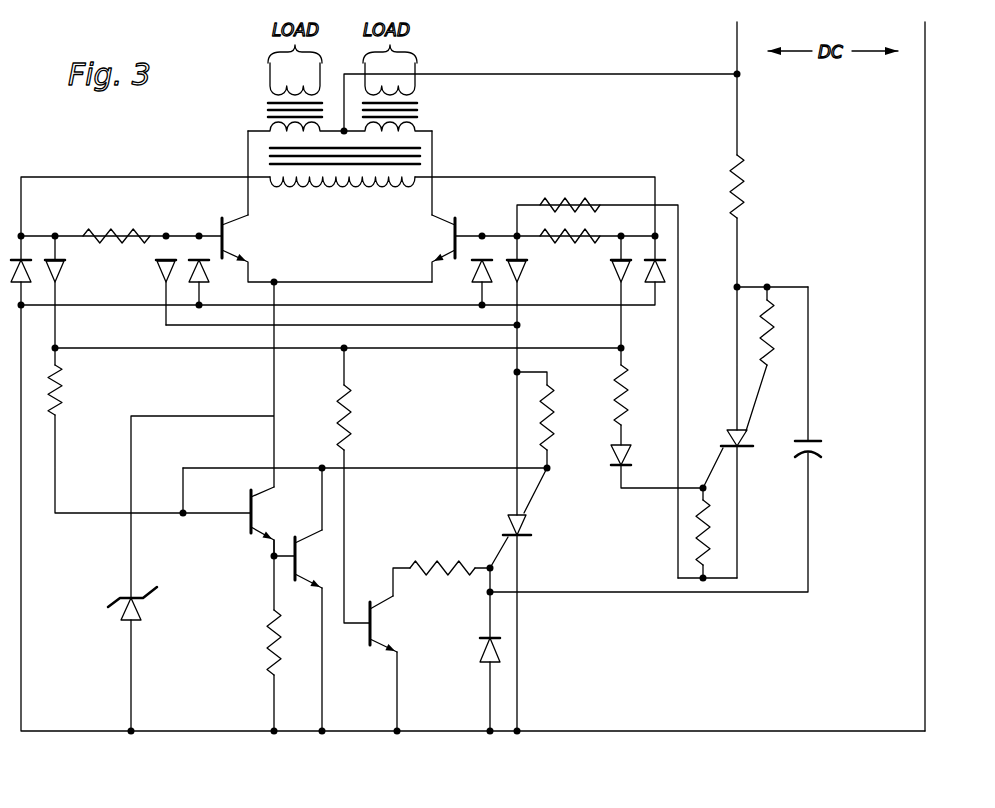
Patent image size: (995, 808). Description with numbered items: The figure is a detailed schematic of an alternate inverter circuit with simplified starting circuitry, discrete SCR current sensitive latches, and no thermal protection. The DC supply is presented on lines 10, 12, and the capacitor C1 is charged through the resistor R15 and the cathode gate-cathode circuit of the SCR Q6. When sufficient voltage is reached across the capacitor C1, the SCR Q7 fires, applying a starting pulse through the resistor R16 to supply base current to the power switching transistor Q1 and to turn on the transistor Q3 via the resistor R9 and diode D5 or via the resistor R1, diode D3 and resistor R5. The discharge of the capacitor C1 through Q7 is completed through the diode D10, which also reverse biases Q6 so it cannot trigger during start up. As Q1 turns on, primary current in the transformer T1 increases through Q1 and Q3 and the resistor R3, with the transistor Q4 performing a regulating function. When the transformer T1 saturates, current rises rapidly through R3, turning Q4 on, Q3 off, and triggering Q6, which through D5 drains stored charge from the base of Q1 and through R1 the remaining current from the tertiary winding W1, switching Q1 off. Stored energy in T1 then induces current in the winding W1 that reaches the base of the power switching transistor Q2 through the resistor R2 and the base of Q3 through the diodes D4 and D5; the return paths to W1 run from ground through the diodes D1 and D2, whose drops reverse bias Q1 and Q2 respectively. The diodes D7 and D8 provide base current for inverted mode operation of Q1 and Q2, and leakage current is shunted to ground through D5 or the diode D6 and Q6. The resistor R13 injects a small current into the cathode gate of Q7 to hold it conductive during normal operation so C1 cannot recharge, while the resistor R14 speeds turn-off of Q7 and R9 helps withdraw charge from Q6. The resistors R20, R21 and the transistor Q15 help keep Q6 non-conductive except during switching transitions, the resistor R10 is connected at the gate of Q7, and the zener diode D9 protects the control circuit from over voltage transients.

The DC supply line 10 is at (737, 130).
The DC supply line 12 is at (925, 137).
The transformer T1 is at (357, 130).
The tertiary winding W1 is at (342, 191).
The power switching transistor Q1 is at (435, 248).
The power switching transistor Q2 is at (327, 248).
The transistor Q3 is at (267, 521).
The transistor Q4 is at (309, 559).
The SCR current latch Q6 is at (530, 535).
The SCR current latch Q7 is at (738, 459).
The transistor Q15 is at (391, 624).
The resistor R1 is at (583, 228).
The resistor R2 is at (116, 225).
The resistor R3 is at (249, 642).
The resistor R5 is at (70, 390).
The resistor R9 is at (561, 417).
The resistor R10 is at (720, 541).
The resistor R13 is at (641, 395).
The resistor R14 is at (784, 332).
The resistor R15 is at (759, 186).
The resistor R16 is at (588, 197).
The resistor R20 is at (366, 417).
The resistor R21 is at (442, 553).
The diode D1 is at (646, 283).
The diode D2 is at (30, 283).
The diode D3 is at (610, 283).
The diode D4 is at (65, 283).
The diode D5 is at (528, 283).
The diode D6 is at (156, 283).
The diode D7 is at (473, 283).
The diode D8 is at (209, 283).
The zener diode D9 is at (144, 603).
The diode D10 is at (465, 653).
The capacitor C1 is at (820, 461).